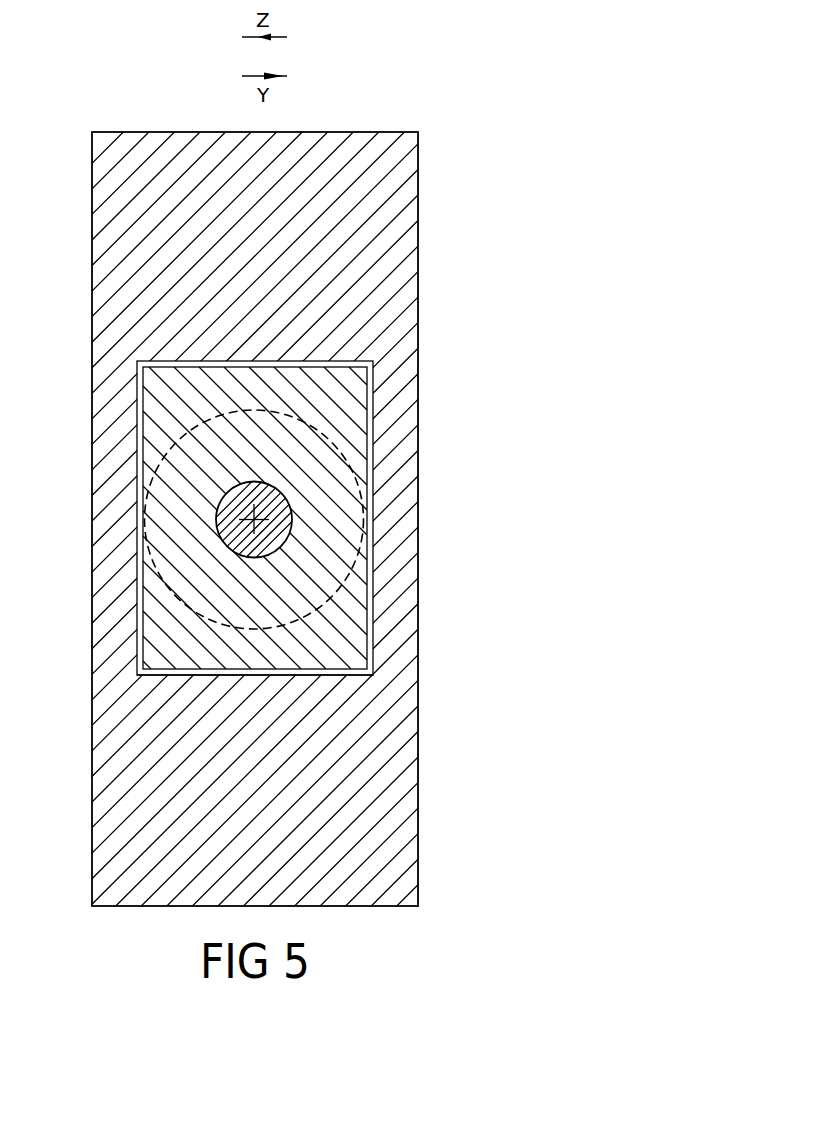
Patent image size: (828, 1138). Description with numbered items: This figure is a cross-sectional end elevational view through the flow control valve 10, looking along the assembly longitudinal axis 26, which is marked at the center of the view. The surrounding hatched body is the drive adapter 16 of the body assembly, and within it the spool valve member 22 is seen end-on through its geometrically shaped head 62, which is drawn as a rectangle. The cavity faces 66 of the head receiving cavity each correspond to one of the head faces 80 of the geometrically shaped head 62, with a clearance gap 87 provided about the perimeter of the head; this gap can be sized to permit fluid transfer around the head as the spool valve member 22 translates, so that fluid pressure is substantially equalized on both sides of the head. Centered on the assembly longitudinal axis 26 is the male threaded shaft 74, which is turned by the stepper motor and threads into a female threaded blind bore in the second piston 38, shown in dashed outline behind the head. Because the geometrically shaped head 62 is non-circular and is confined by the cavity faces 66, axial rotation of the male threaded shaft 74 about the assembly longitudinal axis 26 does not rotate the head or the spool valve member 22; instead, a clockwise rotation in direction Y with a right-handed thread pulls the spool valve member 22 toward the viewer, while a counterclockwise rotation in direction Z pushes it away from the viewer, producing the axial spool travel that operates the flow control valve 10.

The flow control valve 10 is at (442, 130).
The drive adapter 16 is at (402, 222).
The spool valve member 22 is at (392, 548).
The assembly longitudinal axis 26 is at (248, 528).
The second piston 38 is at (326, 436).
The geometrically shaped head 62 is at (347, 634).
The cavity faces 66 is at (323, 355).
The male threaded shaft 74 is at (279, 509).
The head faces 80 is at (349, 366).
The clearance gap 87 is at (348, 672).